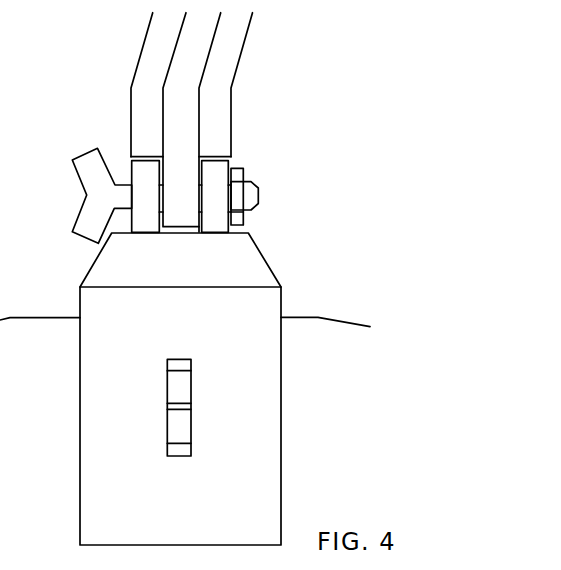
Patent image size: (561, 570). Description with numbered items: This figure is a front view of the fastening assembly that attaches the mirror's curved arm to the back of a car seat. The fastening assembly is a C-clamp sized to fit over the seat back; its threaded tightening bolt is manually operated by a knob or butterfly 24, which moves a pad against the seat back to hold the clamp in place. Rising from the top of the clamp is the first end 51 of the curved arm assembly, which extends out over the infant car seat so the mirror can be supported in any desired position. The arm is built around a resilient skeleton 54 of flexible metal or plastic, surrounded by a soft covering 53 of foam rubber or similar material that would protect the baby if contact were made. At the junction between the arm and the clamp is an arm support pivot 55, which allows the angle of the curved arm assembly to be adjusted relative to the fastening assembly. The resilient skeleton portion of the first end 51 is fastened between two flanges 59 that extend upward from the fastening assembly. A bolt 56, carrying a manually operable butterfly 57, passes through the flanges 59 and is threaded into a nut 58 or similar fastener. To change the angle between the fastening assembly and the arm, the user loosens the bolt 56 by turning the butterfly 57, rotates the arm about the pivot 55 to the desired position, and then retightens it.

The butterfly 24 is at (197, 393).
The first end 51 is at (195, 122).
The soft covering 53 is at (227, 47).
The resilient skeleton 54 is at (188, 47).
The arm support pivot 55 is at (290, 191).
The bolt 56 is at (125, 197).
The butterfly 57 is at (88, 167).
The nut 58 is at (240, 222).
The flanges 59 is at (214, 197).